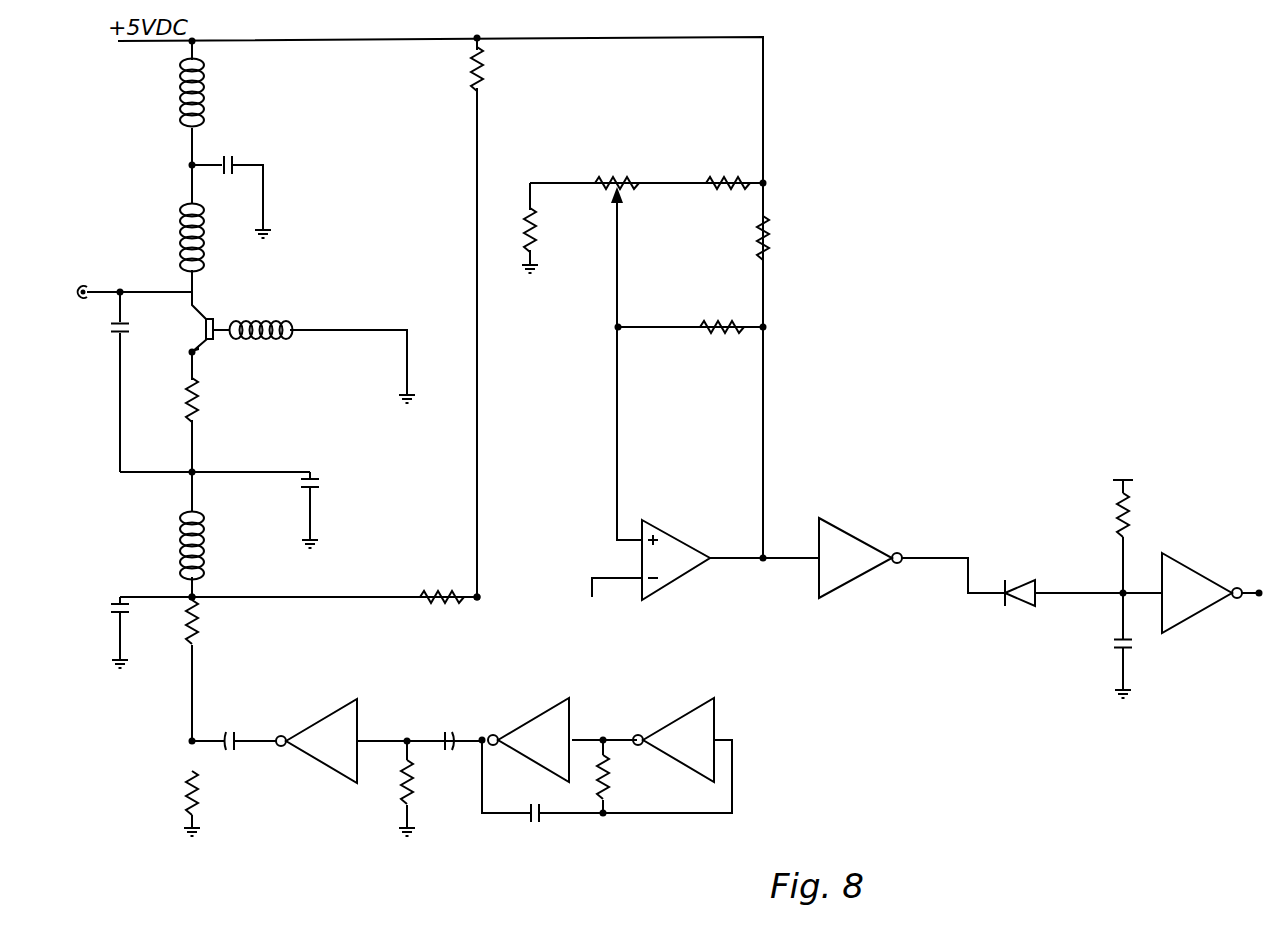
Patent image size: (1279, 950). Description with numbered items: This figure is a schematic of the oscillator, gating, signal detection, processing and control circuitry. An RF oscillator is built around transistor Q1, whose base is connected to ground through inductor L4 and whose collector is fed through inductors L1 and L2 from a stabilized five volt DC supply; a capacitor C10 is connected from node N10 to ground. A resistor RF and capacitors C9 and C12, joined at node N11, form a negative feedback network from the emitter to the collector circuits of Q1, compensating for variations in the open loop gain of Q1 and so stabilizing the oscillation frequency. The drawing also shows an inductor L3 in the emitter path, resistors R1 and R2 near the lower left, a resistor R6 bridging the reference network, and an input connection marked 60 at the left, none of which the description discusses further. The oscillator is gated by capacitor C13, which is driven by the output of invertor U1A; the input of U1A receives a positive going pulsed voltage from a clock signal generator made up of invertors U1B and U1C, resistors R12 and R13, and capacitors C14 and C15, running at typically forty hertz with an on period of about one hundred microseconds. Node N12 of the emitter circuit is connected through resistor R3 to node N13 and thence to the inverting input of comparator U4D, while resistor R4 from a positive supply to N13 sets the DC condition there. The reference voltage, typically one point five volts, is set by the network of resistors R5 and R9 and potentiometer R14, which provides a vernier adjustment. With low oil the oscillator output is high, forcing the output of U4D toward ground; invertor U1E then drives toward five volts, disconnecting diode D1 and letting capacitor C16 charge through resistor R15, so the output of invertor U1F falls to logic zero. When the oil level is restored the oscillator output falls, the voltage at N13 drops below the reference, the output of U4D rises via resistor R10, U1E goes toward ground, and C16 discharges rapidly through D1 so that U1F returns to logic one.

The antenna input connector 60 is at (81, 280).
The inductor L1 is at (217, 93).
The node N10 is at (165, 169).
The capacitor C10 is at (275, 174).
The inductor L2 is at (207, 240).
The transistor Q1 is at (213, 320).
The inductor L4 is at (256, 328).
The capacitor C9 is at (100, 362).
The resistor RF is at (209, 401).
The node N11 is at (221, 462).
The capacitor C12 is at (338, 502).
The inductor L3 220nH L3 is at (212, 546).
The node N12 is at (162, 575).
The resistor R1 is at (177, 625).
The resistor R2 4.9k R2 is at (158, 797).
The capacitor C13 is at (244, 771).
The invertor U1A is at (307, 741).
The capacitor C15 is at (443, 713).
The resistor R12 is at (434, 790).
The invertor U1B is at (522, 740).
The invertor U1C is at (663, 740).
The resistor R13 is at (639, 786).
The capacitor C14 is at (525, 840).
The resistor R3 is at (433, 572).
The node N13 is at (453, 613).
The resistor R4 is at (478, 69).
The resistor R5 is at (510, 237).
The potentiometer R14 is at (618, 162).
The resistor R9 is at (724, 182).
The resistor R10 is at (795, 241).
The resistor R6 750k R6 is at (720, 329).
The comparator U4D is at (691, 560).
The invertor U1E is at (871, 558).
The diode D1 is at (1022, 578).
The resistor R15 is at (1141, 502).
The capacitor C16 is at (1120, 666).
The invertor U1F is at (1211, 593).